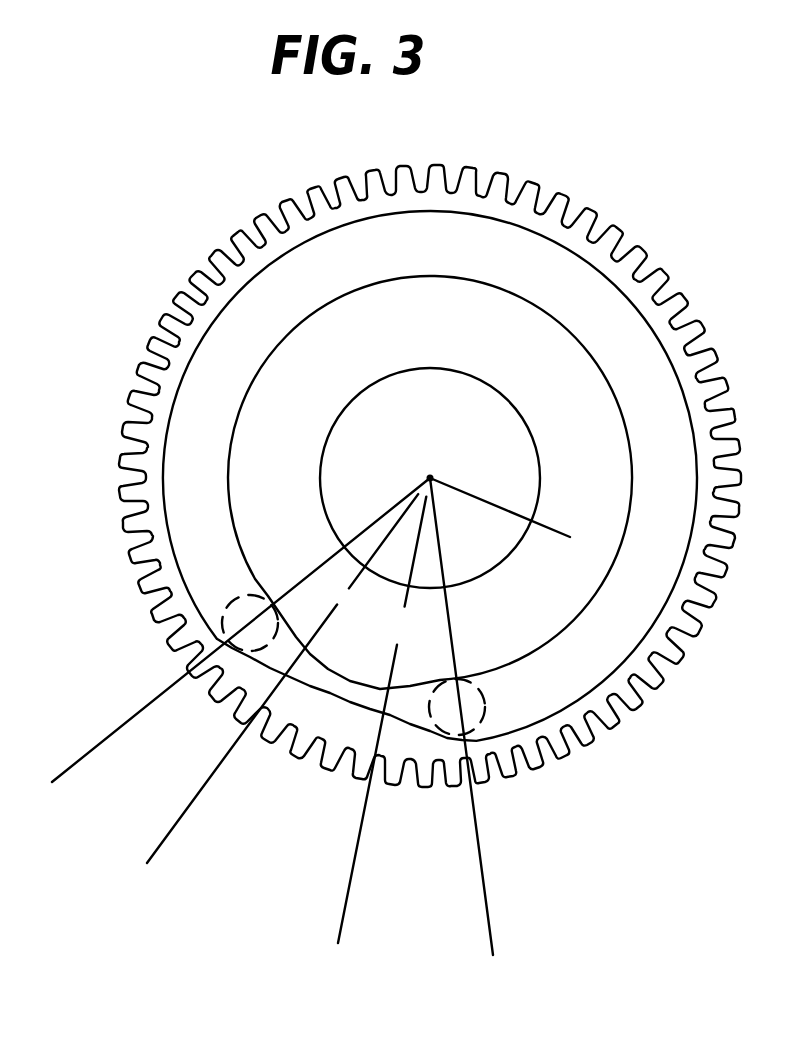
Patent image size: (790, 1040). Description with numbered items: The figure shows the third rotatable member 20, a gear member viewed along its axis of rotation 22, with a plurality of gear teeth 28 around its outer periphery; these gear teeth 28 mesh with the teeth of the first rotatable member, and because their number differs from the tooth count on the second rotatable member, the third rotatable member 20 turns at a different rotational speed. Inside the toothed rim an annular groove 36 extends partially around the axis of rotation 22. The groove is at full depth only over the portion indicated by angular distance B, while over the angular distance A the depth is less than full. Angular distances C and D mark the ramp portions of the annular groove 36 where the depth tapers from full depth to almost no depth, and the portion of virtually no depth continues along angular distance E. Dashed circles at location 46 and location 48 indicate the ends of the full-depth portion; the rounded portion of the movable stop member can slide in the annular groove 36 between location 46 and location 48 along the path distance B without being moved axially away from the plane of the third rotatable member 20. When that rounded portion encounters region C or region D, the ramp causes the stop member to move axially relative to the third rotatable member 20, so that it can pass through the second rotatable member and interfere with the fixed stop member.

The gear teeth 28 is at (593, 217).
The annular groove 36 is at (568, 310).
The third rotatable member 20 is at (307, 425).
The axis of rotation 22 is at (513, 519).
The location 46 is at (241, 604).
The location 48 is at (478, 697).
The angular distance A is at (449, 624).
The angular distance B is at (383, 516).
The angular distance C is at (489, 926).
The angular distance D is at (165, 839).
The angular distance E is at (354, 862).